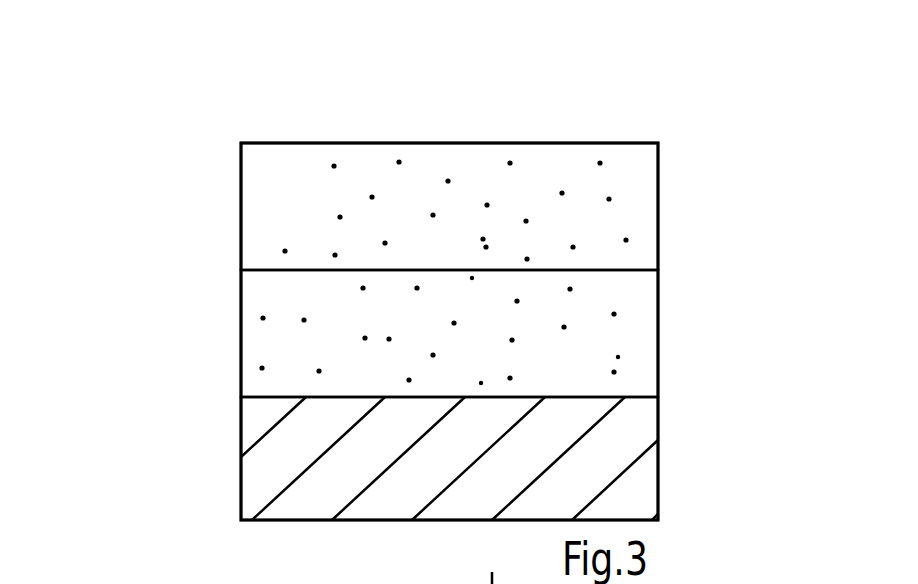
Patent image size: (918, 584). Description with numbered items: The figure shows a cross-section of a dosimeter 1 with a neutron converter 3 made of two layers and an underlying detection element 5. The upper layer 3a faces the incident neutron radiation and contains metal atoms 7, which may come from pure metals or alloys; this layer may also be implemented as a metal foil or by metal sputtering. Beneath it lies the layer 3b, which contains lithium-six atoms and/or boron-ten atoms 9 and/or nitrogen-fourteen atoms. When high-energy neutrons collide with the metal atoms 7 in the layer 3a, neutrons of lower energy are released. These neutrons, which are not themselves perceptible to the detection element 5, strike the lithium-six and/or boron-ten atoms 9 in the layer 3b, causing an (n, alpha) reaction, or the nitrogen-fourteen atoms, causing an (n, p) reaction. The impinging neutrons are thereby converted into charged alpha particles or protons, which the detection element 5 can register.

The dosimeter 1 is at (483, 118).
The neutron converter 3 is at (419, 230).
The layer 3a is at (512, 164).
The layer 3b is at (463, 336).
The detection element 5 is at (658, 457).
The metal atoms 7 is at (282, 186).
The lithium-6 atoms and/or boron-10 atoms 9 is at (292, 354).